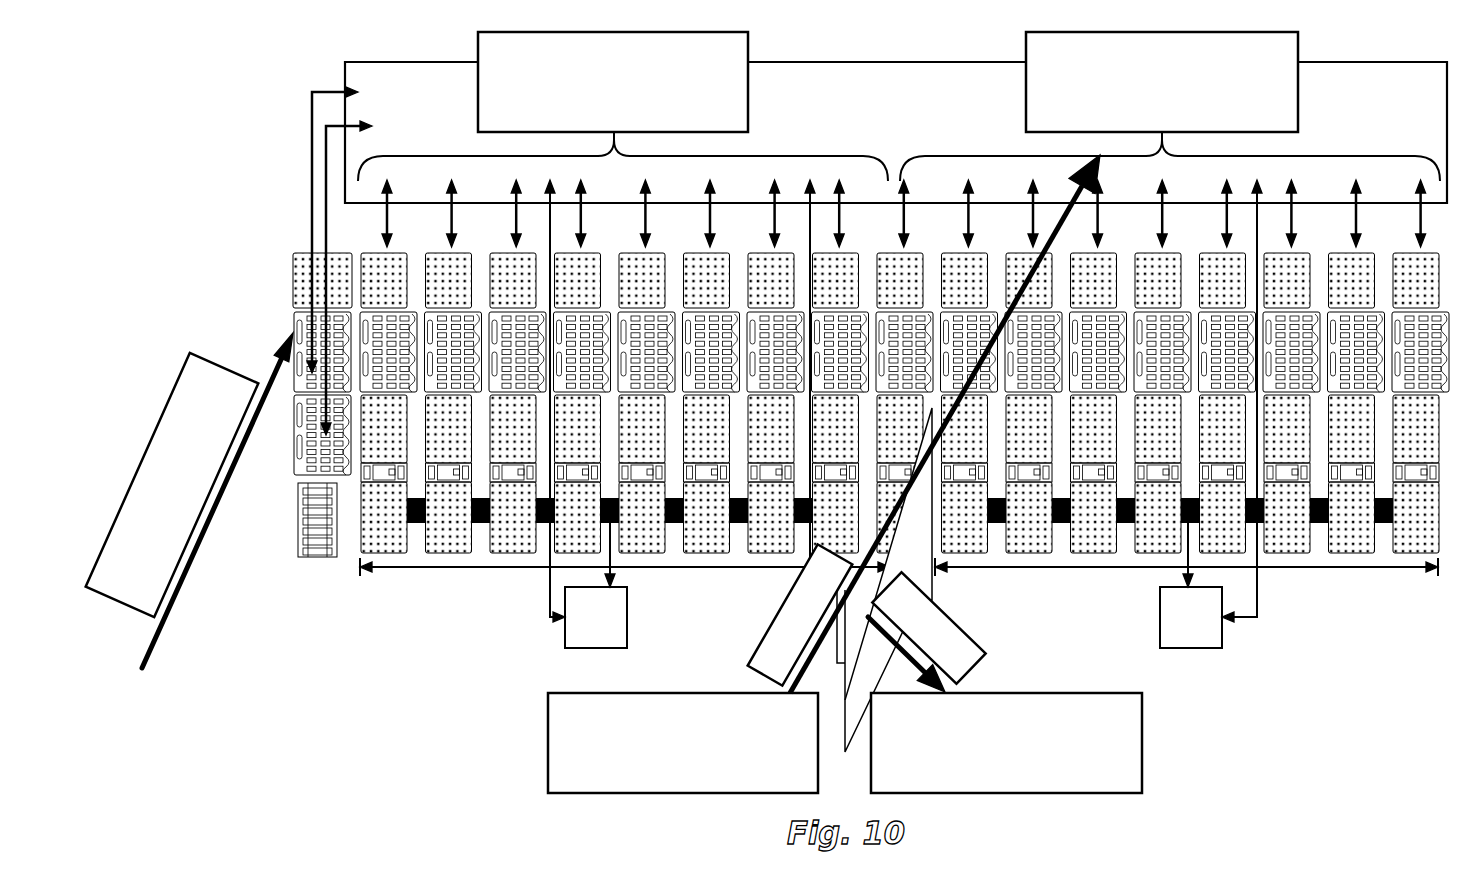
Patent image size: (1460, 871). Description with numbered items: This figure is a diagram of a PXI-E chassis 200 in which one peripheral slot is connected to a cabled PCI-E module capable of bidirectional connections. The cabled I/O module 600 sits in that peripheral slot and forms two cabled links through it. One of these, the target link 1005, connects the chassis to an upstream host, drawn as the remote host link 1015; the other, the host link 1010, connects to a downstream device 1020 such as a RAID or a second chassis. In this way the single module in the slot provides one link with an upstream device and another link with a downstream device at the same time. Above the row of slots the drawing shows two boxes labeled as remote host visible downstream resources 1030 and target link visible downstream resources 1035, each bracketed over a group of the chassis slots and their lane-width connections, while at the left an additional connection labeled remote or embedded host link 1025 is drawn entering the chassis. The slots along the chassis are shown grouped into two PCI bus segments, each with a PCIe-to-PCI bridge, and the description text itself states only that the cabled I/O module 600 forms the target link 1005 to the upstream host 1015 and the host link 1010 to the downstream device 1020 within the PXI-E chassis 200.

The PXI-E chassis 200 is at (866, 22).
The remote host visible downstream resources 1030 is at (748, 99).
The target link visible downstream resources 1035 is at (1026, 100).
The remote or embedded host link 1 1025 is at (125, 496).
The upstream host 1015 is at (548, 746).
The downstream device 1020 is at (1132, 738).
The target link 1005 is at (762, 646).
The cabled I/O module 600 is at (915, 573).
The host link 1010 is at (973, 642).